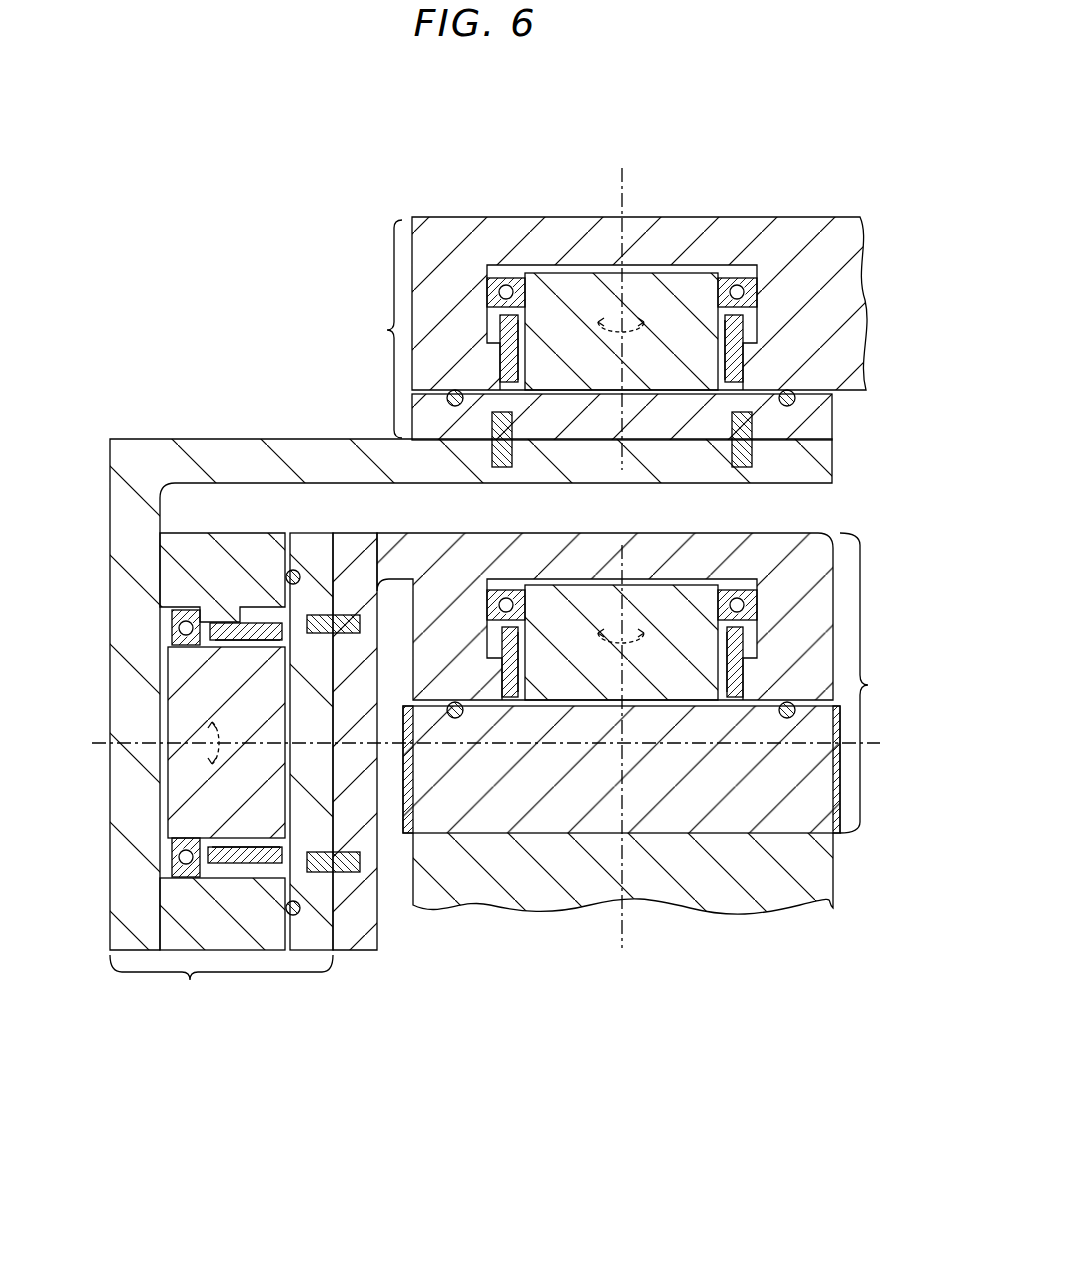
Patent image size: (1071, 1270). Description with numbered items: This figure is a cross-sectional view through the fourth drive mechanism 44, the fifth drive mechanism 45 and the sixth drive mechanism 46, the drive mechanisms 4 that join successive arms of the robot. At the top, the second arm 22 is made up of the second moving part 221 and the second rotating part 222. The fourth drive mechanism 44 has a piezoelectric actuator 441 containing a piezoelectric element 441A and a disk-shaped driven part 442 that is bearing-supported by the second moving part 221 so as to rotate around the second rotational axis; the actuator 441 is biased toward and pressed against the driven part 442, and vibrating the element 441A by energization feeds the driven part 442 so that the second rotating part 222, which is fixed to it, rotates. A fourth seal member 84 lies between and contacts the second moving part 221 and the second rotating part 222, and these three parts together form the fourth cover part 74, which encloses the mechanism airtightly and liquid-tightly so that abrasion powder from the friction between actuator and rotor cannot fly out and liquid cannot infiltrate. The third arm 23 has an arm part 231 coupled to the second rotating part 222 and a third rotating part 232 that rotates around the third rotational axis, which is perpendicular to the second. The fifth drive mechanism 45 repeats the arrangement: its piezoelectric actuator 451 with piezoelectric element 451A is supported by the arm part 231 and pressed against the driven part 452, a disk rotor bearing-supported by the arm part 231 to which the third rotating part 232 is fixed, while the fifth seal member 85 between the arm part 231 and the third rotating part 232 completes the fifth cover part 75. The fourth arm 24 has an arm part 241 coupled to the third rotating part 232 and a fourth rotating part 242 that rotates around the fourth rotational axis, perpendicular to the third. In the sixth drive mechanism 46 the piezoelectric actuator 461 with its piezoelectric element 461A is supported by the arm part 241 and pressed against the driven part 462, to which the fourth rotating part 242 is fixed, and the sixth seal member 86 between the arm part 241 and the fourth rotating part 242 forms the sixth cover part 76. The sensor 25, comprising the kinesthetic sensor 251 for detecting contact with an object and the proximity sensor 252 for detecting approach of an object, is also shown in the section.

The second arm 22 is at (597, 270).
The second moving part 221 is at (485, 216).
The second rotating part 222 is at (418, 410).
The third arm 23 is at (471, 684).
The arm part 231 is at (243, 440).
The third rotating part 232 is at (307, 940).
The fourth arm 24 is at (563, 701).
The arm part 241 is at (678, 560).
The fourth rotating part 242 is at (768, 790).
The sensor 25 is at (670, 861).
The kinesthetic sensor 251 is at (482, 875).
The proximity sensor 252 is at (843, 797).
The joint 4 is at (563, 245).
The fourth drive mechanism 44 is at (563, 245).
The piezoelectric actuator 441 is at (497, 330).
The piezoelectric element 441A is at (528, 350).
The driven part 442 is at (595, 290).
The fifth drive mechanism 45 is at (150, 835).
The piezoelectric actuator 451 is at (245, 625).
The piezoelectric element 451A is at (245, 655).
The driven part 452 is at (195, 795).
The sixth drive mechanism 46 is at (652, 751).
The piezoelectric actuator 461 is at (507, 672).
The piezoelectric element 461A is at (527, 692).
The driven part 462 is at (675, 680).
The fourth cover part 74 is at (378, 329).
The fifth cover part 75 is at (221, 981).
The sixth cover part 76 is at (869, 683).
The fourth seal member 84 is at (797, 401).
The fifth seal member 85 is at (300, 915).
The sixth seal member 86 is at (455, 718).